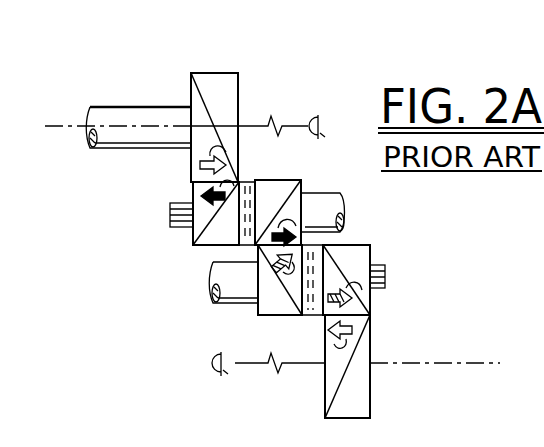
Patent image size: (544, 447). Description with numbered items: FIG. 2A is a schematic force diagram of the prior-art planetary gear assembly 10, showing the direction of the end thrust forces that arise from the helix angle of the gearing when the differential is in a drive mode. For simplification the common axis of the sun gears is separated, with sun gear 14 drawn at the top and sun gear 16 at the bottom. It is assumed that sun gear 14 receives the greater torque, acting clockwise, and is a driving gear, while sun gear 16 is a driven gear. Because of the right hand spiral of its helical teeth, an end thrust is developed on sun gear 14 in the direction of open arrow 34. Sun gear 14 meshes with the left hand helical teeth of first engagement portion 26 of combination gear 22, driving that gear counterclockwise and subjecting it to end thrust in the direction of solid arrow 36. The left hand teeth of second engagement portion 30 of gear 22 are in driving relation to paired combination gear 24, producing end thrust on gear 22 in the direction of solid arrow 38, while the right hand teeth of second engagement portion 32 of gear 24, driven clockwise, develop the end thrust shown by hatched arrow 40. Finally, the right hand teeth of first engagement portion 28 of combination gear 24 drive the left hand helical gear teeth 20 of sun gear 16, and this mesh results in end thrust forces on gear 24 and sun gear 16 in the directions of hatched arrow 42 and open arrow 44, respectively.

The input optical fiber 10 is at (166, 112).
The sun gear 14 is at (238, 92).
The sun gear 16 is at (325, 402).
The left hand helical gear teeth 20 is at (397, 402).
The combination gear 22 is at (200, 240).
The combination gear 24 is at (370, 248).
The first engagement portion 26 is at (205, 250).
The first engagement portion 28 is at (386, 280).
The second engagement portion 30 is at (300, 186).
The second engagement portion 32 is at (283, 312).
The open arrow 34 is at (236, 150).
The solid arrow 36 is at (193, 184).
The solid arrow 38 is at (345, 216).
The hatched arrow 40 is at (258, 282).
The hatched arrow 42 is at (370, 326).
The open arrow 44 is at (328, 332).